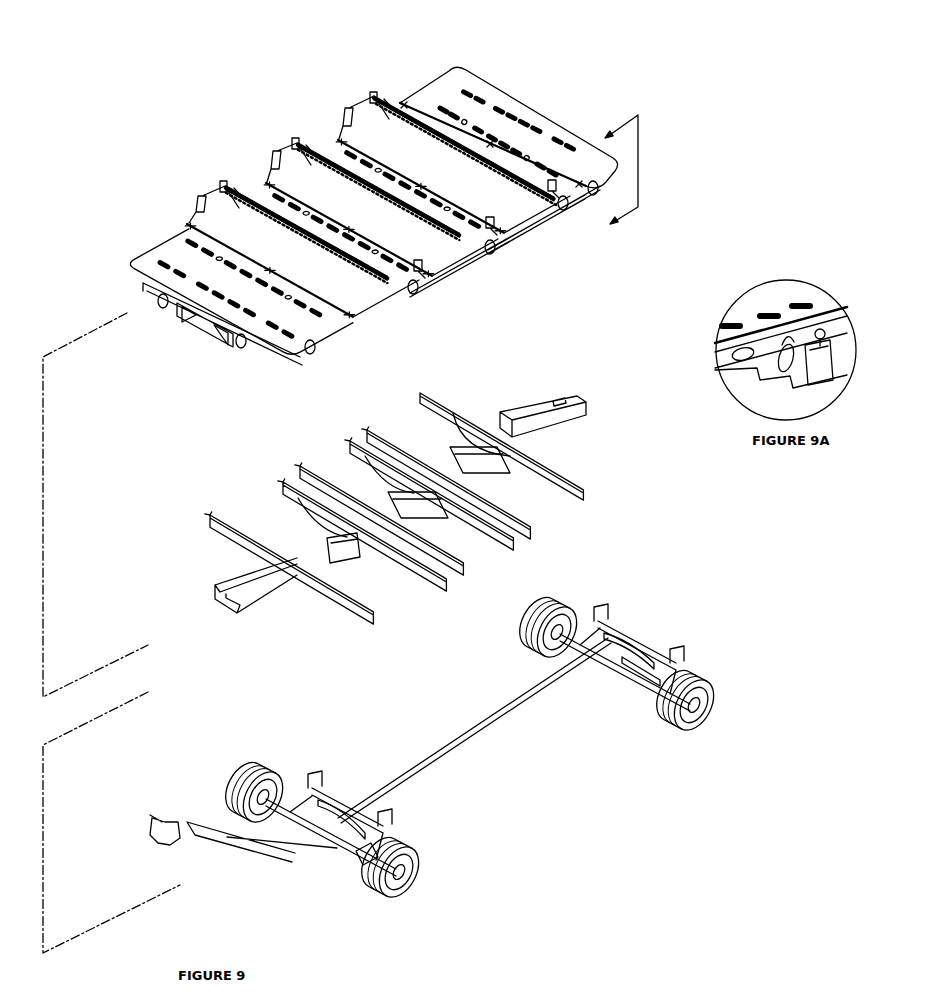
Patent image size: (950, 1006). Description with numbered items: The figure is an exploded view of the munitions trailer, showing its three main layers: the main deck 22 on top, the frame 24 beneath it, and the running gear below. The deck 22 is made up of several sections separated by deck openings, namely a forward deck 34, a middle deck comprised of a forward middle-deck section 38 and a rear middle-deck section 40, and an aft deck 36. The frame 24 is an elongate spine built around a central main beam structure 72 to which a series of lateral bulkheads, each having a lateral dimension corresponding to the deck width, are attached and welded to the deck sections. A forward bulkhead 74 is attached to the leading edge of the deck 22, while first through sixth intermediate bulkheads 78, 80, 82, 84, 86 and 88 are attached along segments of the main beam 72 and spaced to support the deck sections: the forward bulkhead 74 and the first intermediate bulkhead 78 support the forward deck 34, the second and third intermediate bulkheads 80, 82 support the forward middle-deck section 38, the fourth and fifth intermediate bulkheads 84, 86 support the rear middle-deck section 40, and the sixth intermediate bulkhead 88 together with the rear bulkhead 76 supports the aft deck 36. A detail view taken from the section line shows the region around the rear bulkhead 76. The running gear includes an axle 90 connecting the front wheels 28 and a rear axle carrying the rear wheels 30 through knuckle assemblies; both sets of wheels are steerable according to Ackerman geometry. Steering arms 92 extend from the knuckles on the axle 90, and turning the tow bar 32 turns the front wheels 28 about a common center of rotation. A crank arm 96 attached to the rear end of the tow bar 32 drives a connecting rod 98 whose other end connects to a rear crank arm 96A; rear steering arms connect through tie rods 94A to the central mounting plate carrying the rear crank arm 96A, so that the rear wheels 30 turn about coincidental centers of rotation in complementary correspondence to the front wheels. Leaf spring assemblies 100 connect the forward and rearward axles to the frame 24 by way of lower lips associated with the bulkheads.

In FIG. 9, the main deck 22 is at (583, 79).
In FIG. 9, the frame 24 is at (134, 619).
In FIG. 9, the front wheels 28 is at (403, 890).
In FIG. 9, the rear wheels 30 is at (549, 600).
In FIG. 9, the tow bar 32 is at (198, 848).
In FIG. 9, the forward deck 34 is at (135, 262).
In FIG. 9, the aft deck 36 is at (463, 76).
In FIG. 9, the forward middle-deck section 38 is at (425, 290).
In FIG. 9, the rear middle-deck section 40 is at (496, 241).
In FIG. 9, the central main beam structure 72 is at (243, 573).
In FIG. 9, the forward bulkhead 74 is at (250, 348).
In FIG. 9A, the rear bulkhead 76 is at (812, 385).
In FIG. 9, the first intermediate bulkhead 78 is at (368, 617).
In FIG. 9, the second intermediate bulkhead 80 is at (415, 584).
In FIG. 9, the third intermediate bulkhead 82 is at (450, 570).
In FIG. 9, the fourth intermediate bulkhead 84 is at (348, 442).
In FIG. 9, the fifth intermediate bulkhead 86 is at (366, 430).
In FIG. 9, the sixth intermediate bulkhead 88 is at (419, 394).
In FIG. 9, the axle 90 is at (307, 820).
In FIG. 9, the steering arms 92 is at (362, 862).
In FIG. 9, the tie rods 94A is at (645, 665).
In FIG. 9, the crank arm 96 is at (310, 845).
In FIG. 9, the rear crank arm 96A is at (625, 643).
In FIG. 9, the connecting rod 98 is at (465, 735).
In FIG. 9, the leaf spring assemblies 100 is at (675, 665).